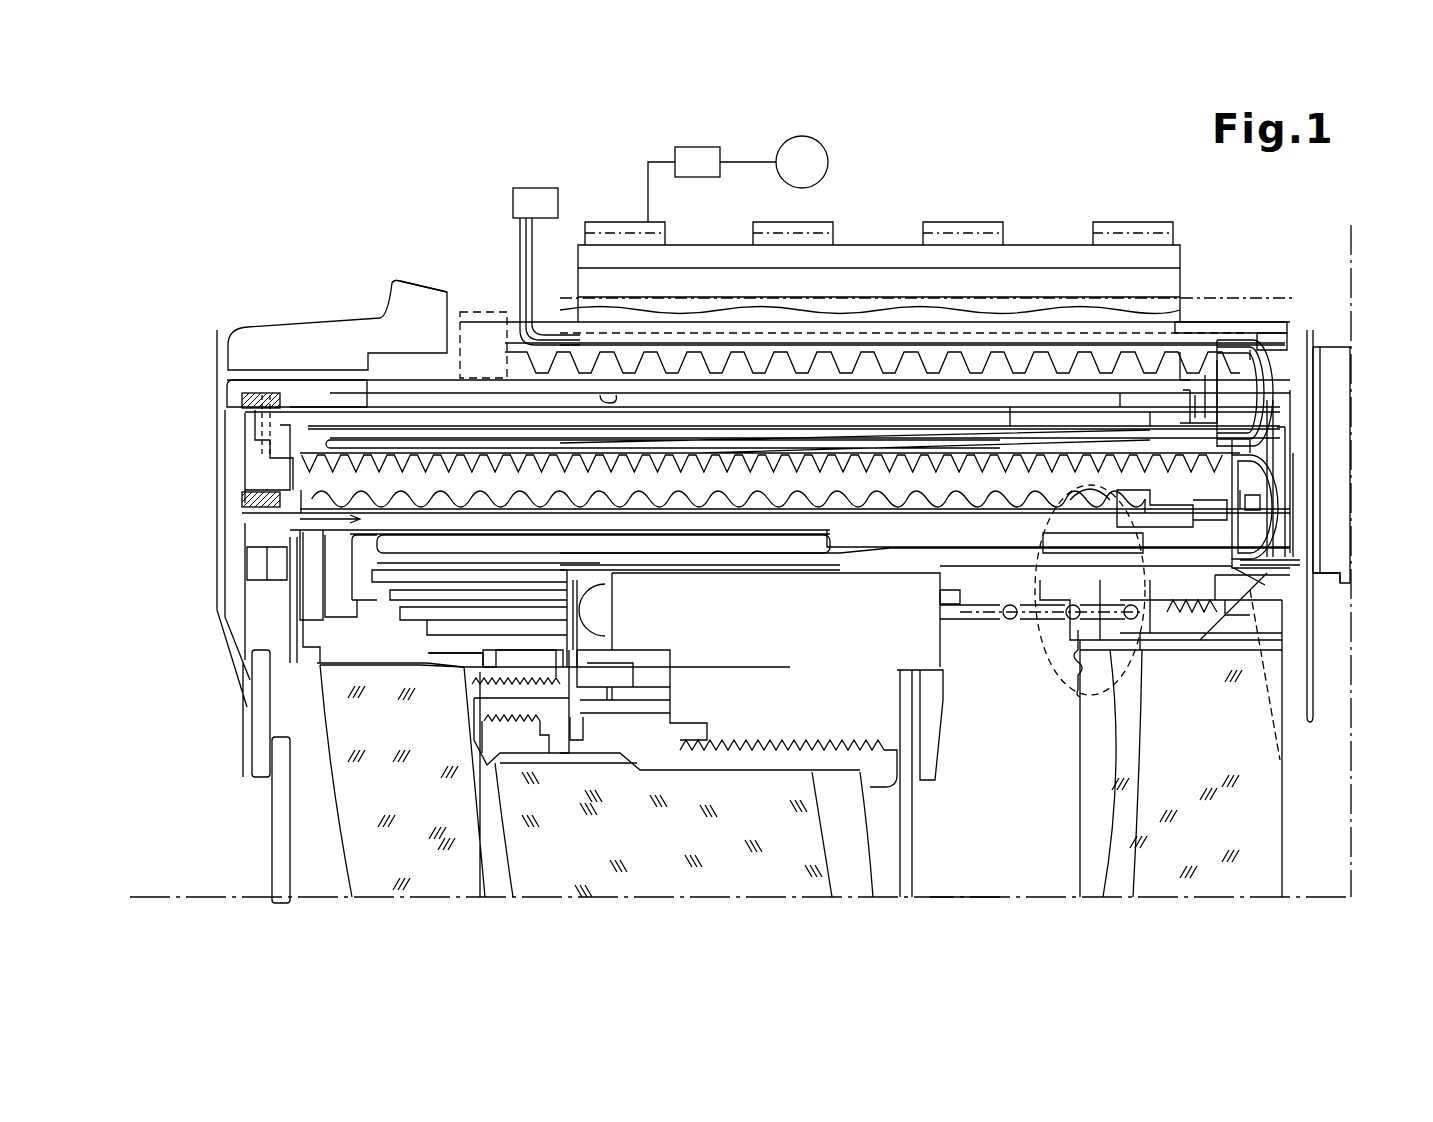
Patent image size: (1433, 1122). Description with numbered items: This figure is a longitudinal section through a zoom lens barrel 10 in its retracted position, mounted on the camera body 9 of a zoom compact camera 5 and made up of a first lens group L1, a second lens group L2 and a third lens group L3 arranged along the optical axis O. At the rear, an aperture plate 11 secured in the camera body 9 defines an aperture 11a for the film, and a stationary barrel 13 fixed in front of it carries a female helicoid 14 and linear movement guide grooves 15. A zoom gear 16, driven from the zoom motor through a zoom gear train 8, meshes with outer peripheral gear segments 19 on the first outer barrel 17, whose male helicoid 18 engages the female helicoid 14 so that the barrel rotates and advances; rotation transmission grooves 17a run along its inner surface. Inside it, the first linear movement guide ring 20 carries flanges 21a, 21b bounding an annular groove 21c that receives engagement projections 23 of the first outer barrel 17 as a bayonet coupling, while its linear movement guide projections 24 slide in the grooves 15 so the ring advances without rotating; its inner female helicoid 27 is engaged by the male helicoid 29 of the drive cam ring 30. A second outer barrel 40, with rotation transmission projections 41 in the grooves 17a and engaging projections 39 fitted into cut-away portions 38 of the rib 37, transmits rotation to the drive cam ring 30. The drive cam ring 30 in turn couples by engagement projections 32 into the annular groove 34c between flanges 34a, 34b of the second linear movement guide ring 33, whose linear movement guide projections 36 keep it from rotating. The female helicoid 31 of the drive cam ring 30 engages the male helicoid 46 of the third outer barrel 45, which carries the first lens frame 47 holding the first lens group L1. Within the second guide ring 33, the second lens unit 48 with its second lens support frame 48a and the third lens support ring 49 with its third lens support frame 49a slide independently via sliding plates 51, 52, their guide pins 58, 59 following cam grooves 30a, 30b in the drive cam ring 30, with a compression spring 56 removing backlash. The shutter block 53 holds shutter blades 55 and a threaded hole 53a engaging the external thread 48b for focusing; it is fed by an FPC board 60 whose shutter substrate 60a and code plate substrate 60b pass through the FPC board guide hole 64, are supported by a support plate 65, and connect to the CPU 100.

The zoom compact camera 5 is at (946, 119).
The zoom gear train 8 is at (738, 173).
The camera body 9 is at (432, 300).
The zoom lens barrel 10 is at (328, 206).
The aperture plate 11 is at (1330, 380).
The aperture 11a is at (1340, 577).
The stationary barrel 13 is at (1290, 338).
The female helicoid 14 is at (1220, 398).
The linear movement guide grooves 15 is at (1300, 330).
The zoom gear 16 is at (858, 224).
The first outer barrel 17 is at (426, 371).
The rotation transmission grooves 17a is at (605, 392).
The male helicoid 18 is at (1082, 370).
The outer peripheral gear segments 19 is at (1062, 452).
The first linear movement guide ring 20 is at (905, 432).
The flange 21a is at (1237, 395).
The flange 21b is at (1240, 405).
The annular groove 21c is at (1225, 397).
The engagement projections 23 is at (1258, 398).
The linear movement guide projections 24 is at (1250, 418).
The female helicoid 27 is at (487, 430).
The male helicoid 29 is at (460, 475).
The drive cam ring 30 is at (392, 430).
The cam grooves 30a is at (1165, 625).
The cam grooves 30b is at (1040, 690).
The female helicoid 31 is at (243, 490).
The engagement projections 32 is at (1218, 418).
The second linear movement guide ring 33 is at (804, 555).
The flange 34a is at (1223, 603).
The flange 34b is at (1297, 580).
The annular groove 34c is at (1253, 620).
The linear movement guide projections 36 is at (1300, 520).
The rib 37 is at (222, 425).
The cut-away portions 38 is at (252, 420).
The engaging projections 39 is at (272, 420).
The second outer barrel 40 is at (359, 405).
The rotation transmission projections 41 is at (1193, 380).
The third outer barrel 45 is at (245, 532).
The male helicoid 46 is at (1040, 585).
The first lens frame 47 is at (377, 660).
The second lens unit 48 is at (641, 912).
The second lens support frame 48a is at (580, 745).
The external thread 48b is at (810, 752).
The third lens support ring 49 is at (1060, 740).
The third lens support frame 49a is at (1282, 750).
The sliding plates 51 is at (1005, 620).
The sliding plates 52 is at (1075, 645).
The shutter block 53 is at (1010, 650).
The threaded hole 53a is at (812, 752).
The shutter blades 55 is at (903, 790).
The compression spring 56 is at (945, 597).
The guide pins 58 is at (1160, 428).
The guide pins 59 is at (1133, 405).
The FPC board 60 is at (1403, 445).
The shutter substrate 60a is at (1285, 500).
The code plate substrate 60b is at (1275, 412).
The FPC board guide hole 64 is at (1020, 418).
The support plate 65 is at (665, 430).
The CPU 100 is at (544, 245).
The first lens group L1 is at (410, 880).
The second lens group L2 is at (690, 875).
The third lens group L3 is at (1182, 878).
The optical axis O is at (940, 900).